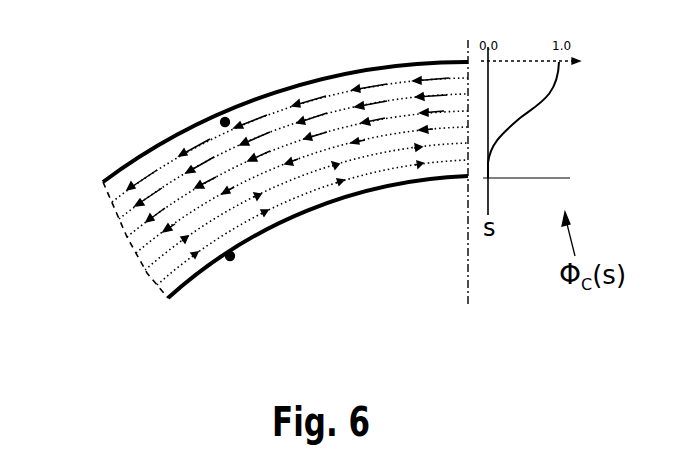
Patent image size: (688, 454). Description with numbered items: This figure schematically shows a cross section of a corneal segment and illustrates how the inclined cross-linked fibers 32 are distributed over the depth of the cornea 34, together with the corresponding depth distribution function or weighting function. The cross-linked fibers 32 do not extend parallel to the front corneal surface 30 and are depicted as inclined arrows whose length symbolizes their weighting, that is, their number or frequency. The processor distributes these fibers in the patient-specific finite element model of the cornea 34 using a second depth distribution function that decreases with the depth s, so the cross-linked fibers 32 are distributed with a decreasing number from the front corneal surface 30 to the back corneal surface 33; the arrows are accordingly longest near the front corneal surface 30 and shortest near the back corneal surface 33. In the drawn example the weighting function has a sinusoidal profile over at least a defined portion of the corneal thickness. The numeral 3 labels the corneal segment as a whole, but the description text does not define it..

The component 3 is at (72, 277).
The front corneal surface 30 is at (306, 79).
The cross-linked fibers 32 is at (222, 121).
The back corneal surface 33 is at (231, 258).
The cornea 34 is at (316, 226).